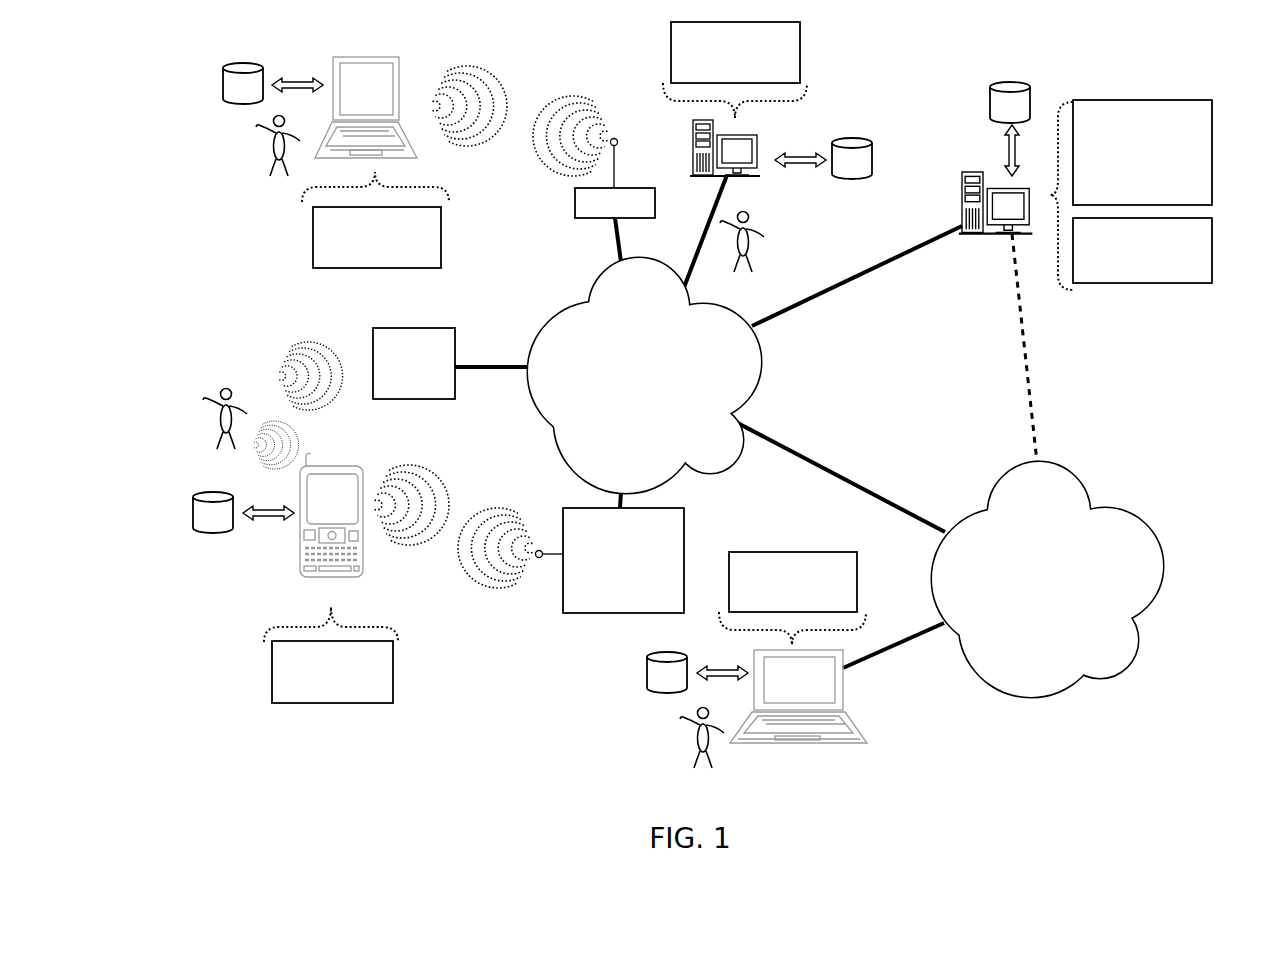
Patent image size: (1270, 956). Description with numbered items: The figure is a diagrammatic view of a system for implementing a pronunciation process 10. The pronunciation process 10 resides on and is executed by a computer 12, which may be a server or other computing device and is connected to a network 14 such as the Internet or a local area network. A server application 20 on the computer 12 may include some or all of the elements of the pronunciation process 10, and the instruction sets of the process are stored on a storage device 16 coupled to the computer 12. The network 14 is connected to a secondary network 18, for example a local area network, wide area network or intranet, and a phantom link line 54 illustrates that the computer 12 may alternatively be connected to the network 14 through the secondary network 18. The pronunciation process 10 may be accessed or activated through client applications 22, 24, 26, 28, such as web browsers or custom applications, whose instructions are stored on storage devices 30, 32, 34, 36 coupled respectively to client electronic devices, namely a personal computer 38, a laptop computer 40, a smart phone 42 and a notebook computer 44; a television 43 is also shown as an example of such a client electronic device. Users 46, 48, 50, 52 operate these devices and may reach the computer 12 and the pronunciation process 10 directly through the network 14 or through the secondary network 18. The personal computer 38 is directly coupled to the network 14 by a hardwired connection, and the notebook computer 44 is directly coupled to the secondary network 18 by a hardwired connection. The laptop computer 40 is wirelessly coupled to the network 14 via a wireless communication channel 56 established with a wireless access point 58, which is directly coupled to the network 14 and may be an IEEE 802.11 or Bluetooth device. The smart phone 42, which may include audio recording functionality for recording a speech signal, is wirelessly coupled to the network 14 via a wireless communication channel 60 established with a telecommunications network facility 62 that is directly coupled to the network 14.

The pronunciation process 10 is at (1212, 155).
The computer 12 is at (952, 186).
The network 14 is at (644, 375).
The storage device 16 is at (1010, 102).
The secondary network 18 is at (1047, 579).
The server application 20 is at (1212, 275).
The client application 22 is at (800, 68).
The client application 24 is at (441, 240).
The client application 26 is at (393, 663).
The client application 28 is at (857, 588).
The storage device 30 is at (852, 158).
The storage device 32 is at (243, 83).
The storage device 34 is at (213, 512).
The storage device 36 is at (667, 672).
The personal computer 38 is at (757, 148).
The laptop computer 40 is at (399, 78).
The smart phone 42 is at (363, 537).
The television 43 is at (455, 388).
The notebook computer 44 is at (843, 695).
The user 46 is at (756, 229).
The user 48 is at (248, 137).
The user 50 is at (206, 400).
The user 52 is at (672, 728).
The phantom link line 54 is at (1019, 342).
The wireless communication channel 56 is at (528, 93).
The wireless access point 58 is at (575, 205).
The wireless communication channel 60 is at (466, 506).
The telecommunications network facility 62 is at (684, 514).